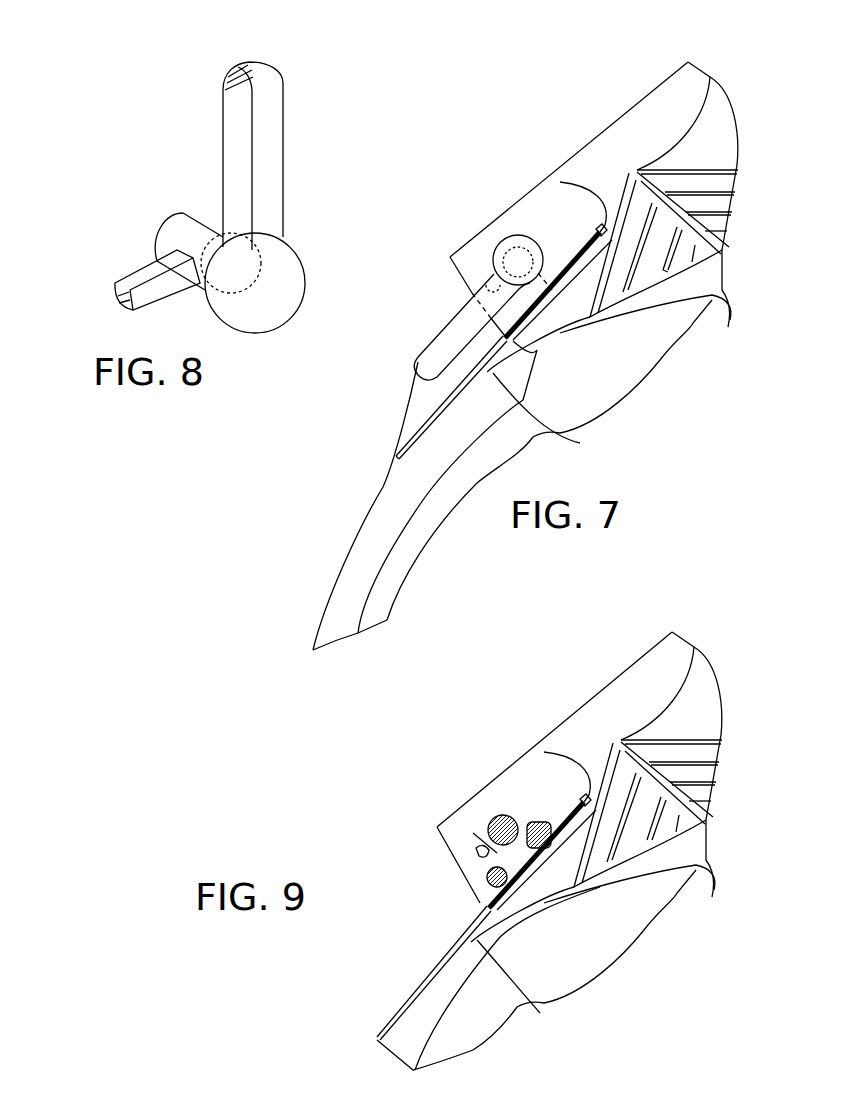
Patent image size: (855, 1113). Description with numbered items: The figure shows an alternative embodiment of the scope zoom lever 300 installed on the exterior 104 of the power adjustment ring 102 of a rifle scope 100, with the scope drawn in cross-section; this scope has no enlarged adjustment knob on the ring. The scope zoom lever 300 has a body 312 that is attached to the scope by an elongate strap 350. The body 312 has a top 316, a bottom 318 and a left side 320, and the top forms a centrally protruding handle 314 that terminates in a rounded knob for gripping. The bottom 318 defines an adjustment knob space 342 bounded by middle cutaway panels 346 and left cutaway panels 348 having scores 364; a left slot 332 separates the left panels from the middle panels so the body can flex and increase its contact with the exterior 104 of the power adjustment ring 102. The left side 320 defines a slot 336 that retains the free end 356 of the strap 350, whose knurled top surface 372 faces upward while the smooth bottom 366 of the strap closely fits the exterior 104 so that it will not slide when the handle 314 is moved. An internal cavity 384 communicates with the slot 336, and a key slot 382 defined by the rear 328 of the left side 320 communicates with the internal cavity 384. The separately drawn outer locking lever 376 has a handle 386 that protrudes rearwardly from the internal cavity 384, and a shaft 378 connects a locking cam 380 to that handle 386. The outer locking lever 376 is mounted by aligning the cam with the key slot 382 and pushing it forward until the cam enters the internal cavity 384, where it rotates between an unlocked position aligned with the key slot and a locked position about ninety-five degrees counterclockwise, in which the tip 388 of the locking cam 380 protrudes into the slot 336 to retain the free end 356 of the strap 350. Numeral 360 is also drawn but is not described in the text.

In FIG. 7, the rifle scope 100 is at (328, 591).
In FIG. 9, the rifle scope 100 is at (623, 881).
In FIG. 7, the power adjustment ring 102 is at (357, 534).
In FIG. 9, the power adjustment ring 102 is at (518, 970).
In FIG. 7, the exterior 104 is at (382, 488).
In FIG. 9, the exterior 104 is at (395, 1045).
In FIG. 7, the scope zoom lever 300 is at (669, 31).
In FIG. 9, the scope zoom lever 300 is at (691, 608).
In FIG. 7, the body 312 is at (661, 111).
In FIG. 9, the body 312 is at (615, 693).
In FIG. 7, the handle 314 is at (681, 91).
In FIG. 9, the handle 314 is at (554, 728).
In FIG. 7, the top 316 is at (622, 136).
In FIG. 9, the top 316 is at (550, 741).
In FIG. 7, the bottom 318 is at (592, 320).
In FIG. 7, the left side 320 is at (450, 259).
In FIG. 9, the left side 320 is at (418, 862).
In FIG. 7, the rear 328 is at (717, 124).
In FIG. 9, the rear 328 is at (734, 772).
In FIG. 7, the left slot 332 is at (710, 245).
In FIG. 9, the left slot 332 is at (675, 815).
In FIG. 7, the slot 336 is at (605, 228).
In FIG. 7, the adjustment knob space 342 is at (677, 290).
In FIG. 9, the adjustment knob space 342 is at (646, 893).
In FIG. 7, the middle cutaway panels 346 is at (707, 182).
In FIG. 9, the middle cutaway panels 346 is at (701, 765).
In FIG. 7, the left cutaway panels 348 is at (653, 257).
In FIG. 9, the left cutaway panels 348 is at (668, 880).
In FIG. 7, the strap 350 is at (428, 418).
In FIG. 9, the strap 350 is at (429, 973).
In FIG. 7, the free end 356 is at (602, 230).
In FIG. 9, the free end 356 is at (553, 759).
In FIG. 9, the bar edge 360 is at (545, 822).
In FIG. 7, the scores 364 is at (707, 195).
In FIG. 9, the scores 364 is at (698, 783).
In FIG. 7, the bottom 366 is at (560, 433).
In FIG. 9, the bottom 366 is at (528, 987).
In FIG. 7, the knurled top surface 372 is at (455, 400).
In FIG. 9, the knurled top surface 372 is at (478, 856).
In FIG. 8, the outer locking lever 376 is at (290, 100).
In FIG. 8, the shaft 378 is at (180, 230).
In FIG. 9, the shaft 378 is at (445, 805).
In FIG. 8, the locking cam 380 is at (130, 277).
In FIG. 9, the locking cam 380 is at (450, 799).
In FIG. 7, the key slot 382 is at (494, 275).
In FIG. 9, the key slot 382 is at (439, 823).
In FIG. 9, the internal cavity 384 is at (447, 871).
In FIG. 8, the handle 386 is at (267, 142).
In FIG. 8, the tip 388 is at (113, 297).
In FIG. 9, the tip 388 is at (510, 799).